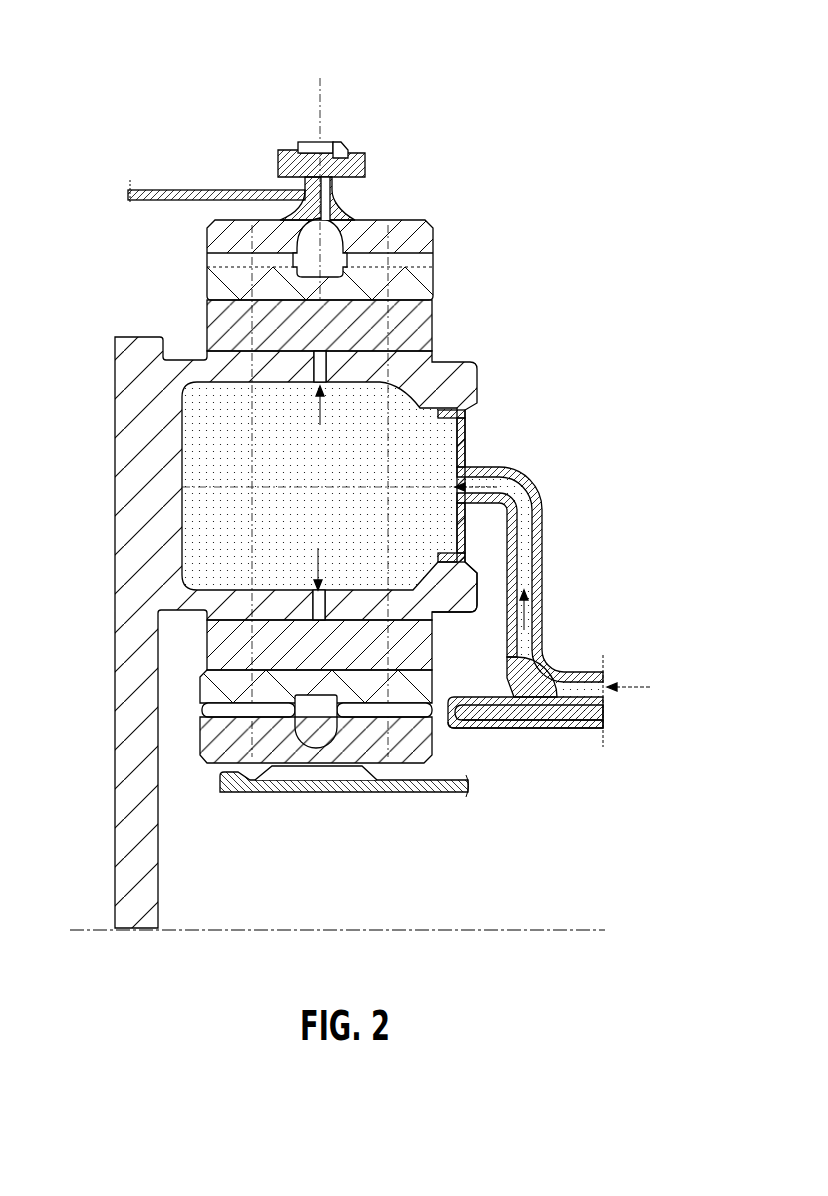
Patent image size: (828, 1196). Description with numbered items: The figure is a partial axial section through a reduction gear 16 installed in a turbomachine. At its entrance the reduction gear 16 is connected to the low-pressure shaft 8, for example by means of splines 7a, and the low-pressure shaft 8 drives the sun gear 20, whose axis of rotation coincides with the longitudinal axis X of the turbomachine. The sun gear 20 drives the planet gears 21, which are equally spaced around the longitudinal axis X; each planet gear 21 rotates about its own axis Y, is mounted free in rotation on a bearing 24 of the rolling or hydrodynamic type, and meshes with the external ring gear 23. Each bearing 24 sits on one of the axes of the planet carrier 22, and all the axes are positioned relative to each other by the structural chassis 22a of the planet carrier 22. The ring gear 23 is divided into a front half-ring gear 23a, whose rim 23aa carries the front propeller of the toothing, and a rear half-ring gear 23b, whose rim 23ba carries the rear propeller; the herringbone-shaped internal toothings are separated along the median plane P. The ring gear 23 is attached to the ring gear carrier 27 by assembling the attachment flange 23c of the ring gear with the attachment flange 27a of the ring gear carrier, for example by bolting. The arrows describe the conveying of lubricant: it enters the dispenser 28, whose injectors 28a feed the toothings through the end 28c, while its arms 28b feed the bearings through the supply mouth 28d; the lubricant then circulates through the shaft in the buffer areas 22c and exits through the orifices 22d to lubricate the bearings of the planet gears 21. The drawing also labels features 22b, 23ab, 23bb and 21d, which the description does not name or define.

The reduction gear 16 is at (597, 205).
The planet carrier 22 is at (329, 589).
The structural chassis 22a is at (136, 445).
The body outlet boss 22b is at (465, 593).
The buffer area 22c is at (319, 486).
The orifice 22d is at (430, 402).
The bearing 24 is at (418, 318).
The external ring gear 23 is at (303, 218).
The front half-ring gear 23a is at (202, 218).
The rim 23aa is at (233, 232).
The bolt head 23ab is at (312, 142).
The rear half-ring gear 23b is at (420, 218).
The rim 23ba is at (378, 230).
The bolt head chamfer 23bb is at (340, 140).
The attachment flange of the ring gear 23c is at (374, 74).
The median plane P is at (322, 100).
The ring gear carrier 27 is at (162, 192).
The attachment flange of the ring gear carrier 27a is at (293, 128).
The planet gear 21 is at (232, 744).
The groove 21d is at (202, 710).
The sun gear 20 is at (212, 732).
The splines 7a is at (300, 775).
The low-pressure shaft 8 is at (345, 817).
The dispenser 28 is at (575, 601).
The injector 28a is at (553, 730).
The arm 28b is at (540, 548).
The end 28c is at (450, 732).
The supply mouth 28d is at (465, 422).
The axis Y is at (432, 488).
The longitudinal axis X is at (598, 930).